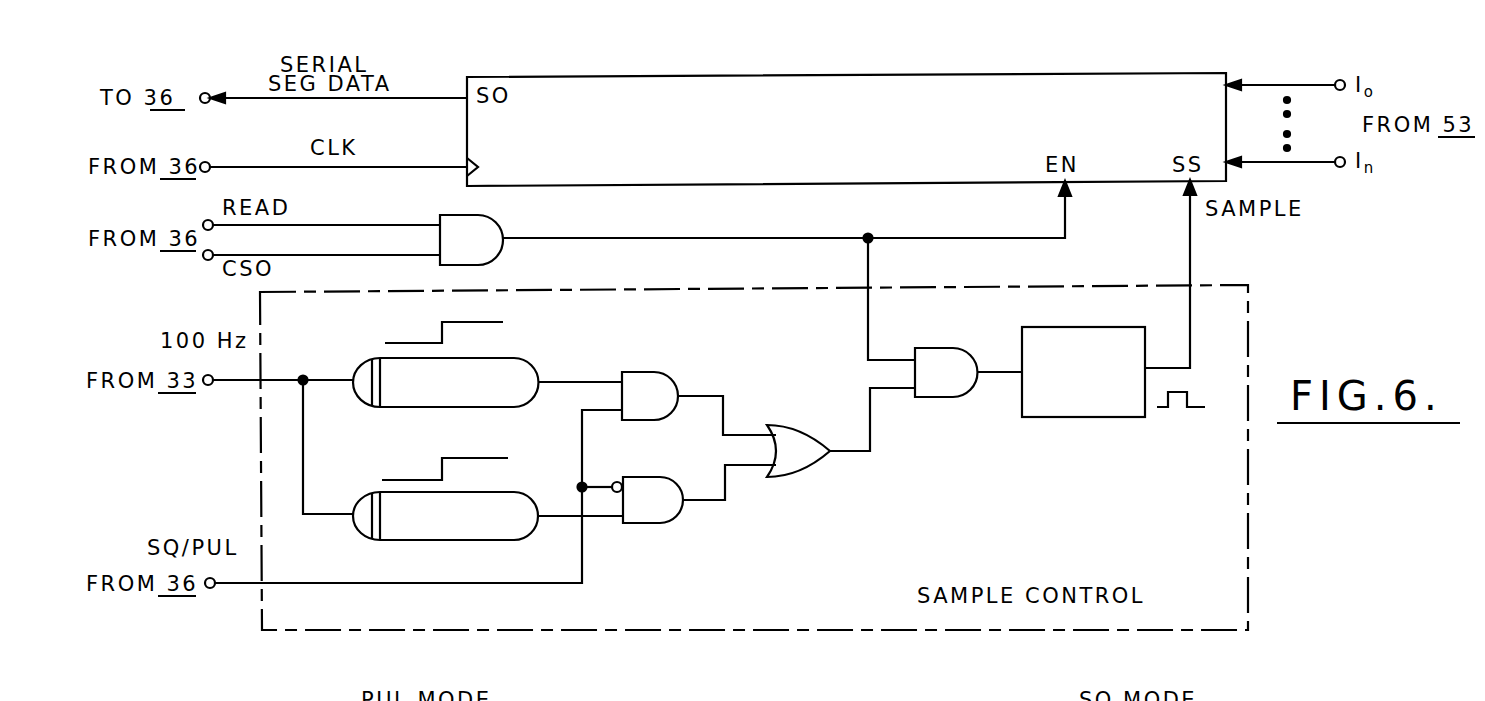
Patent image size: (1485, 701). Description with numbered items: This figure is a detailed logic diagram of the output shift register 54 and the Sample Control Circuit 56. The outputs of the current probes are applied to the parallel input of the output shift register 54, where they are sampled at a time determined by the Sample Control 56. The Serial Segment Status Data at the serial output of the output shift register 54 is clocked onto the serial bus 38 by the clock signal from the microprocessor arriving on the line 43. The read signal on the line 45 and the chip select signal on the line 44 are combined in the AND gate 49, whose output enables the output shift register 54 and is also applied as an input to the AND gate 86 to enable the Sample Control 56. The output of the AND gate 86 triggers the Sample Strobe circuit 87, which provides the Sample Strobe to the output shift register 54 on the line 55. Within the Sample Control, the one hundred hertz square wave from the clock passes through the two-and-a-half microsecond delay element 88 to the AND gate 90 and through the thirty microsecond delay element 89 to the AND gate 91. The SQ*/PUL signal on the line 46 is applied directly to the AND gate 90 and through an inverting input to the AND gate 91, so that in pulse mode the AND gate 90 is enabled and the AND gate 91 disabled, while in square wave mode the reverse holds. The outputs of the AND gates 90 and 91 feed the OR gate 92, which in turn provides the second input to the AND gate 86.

The serial bus 38 is at (286, 100).
The line 43 is at (392, 167).
The line 44 is at (360, 255).
The line 45 is at (372, 225).
The line 46 is at (232, 583).
The AND gate 49 is at (490, 215).
The output shift register 54 is at (840, 184).
The line 55 is at (1190, 243).
The Sample Control Circuit 56 is at (1248, 316).
The AND gate 86 is at (945, 397).
The Sample Strobe circuit 87 is at (1085, 417).
The 2.5 microsecond delay element 88 is at (360, 366).
The 30 microsecond delay element 89 is at (360, 498).
The AND gate 90 is at (660, 372).
The AND gate 91 is at (668, 523).
The OR gate 92 is at (800, 425).